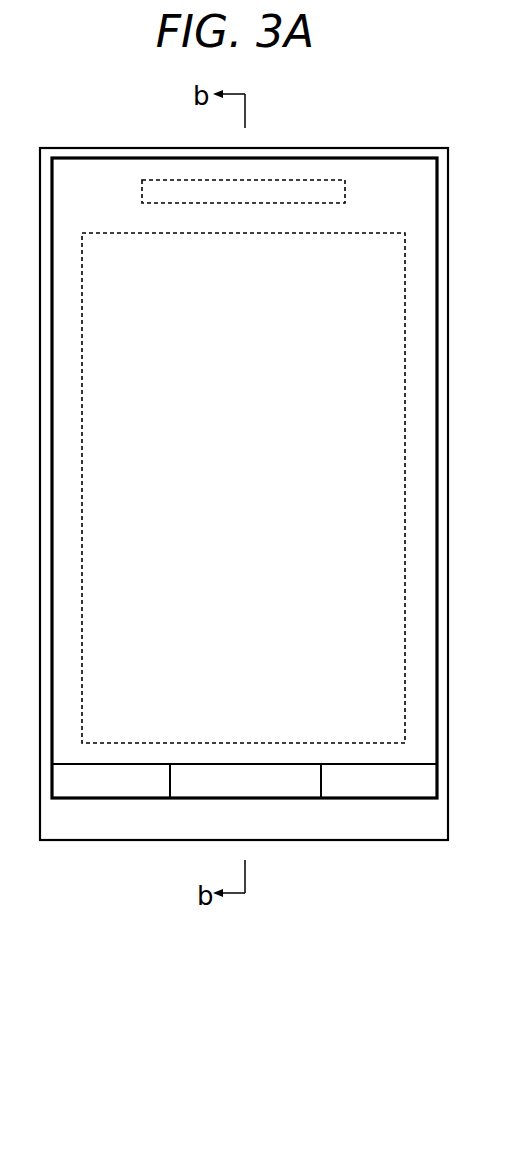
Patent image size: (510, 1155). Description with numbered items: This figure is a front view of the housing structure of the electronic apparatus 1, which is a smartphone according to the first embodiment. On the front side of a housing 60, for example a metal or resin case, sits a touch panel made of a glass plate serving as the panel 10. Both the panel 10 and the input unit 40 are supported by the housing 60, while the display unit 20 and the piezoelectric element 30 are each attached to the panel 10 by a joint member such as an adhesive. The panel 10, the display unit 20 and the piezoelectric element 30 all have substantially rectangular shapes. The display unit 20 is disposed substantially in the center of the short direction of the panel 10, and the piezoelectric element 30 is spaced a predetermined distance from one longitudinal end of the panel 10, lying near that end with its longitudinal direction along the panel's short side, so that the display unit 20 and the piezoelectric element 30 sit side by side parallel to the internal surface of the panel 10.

The electronic apparatus 1 is at (107, 133).
The panel 10 is at (362, 158).
The display unit 20 is at (362, 233).
The piezoelectric element 30 is at (142, 190).
The input unit 40 is at (66, 788).
The housing 60 is at (281, 147).